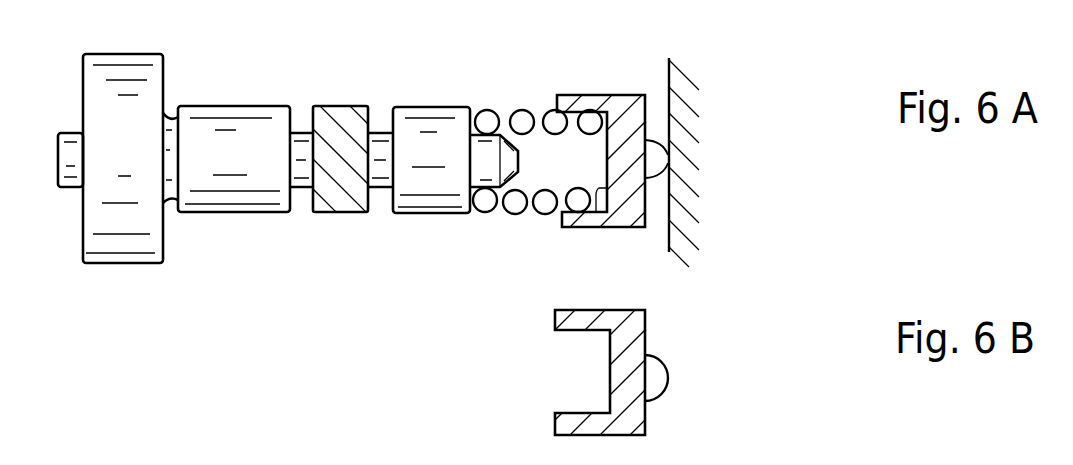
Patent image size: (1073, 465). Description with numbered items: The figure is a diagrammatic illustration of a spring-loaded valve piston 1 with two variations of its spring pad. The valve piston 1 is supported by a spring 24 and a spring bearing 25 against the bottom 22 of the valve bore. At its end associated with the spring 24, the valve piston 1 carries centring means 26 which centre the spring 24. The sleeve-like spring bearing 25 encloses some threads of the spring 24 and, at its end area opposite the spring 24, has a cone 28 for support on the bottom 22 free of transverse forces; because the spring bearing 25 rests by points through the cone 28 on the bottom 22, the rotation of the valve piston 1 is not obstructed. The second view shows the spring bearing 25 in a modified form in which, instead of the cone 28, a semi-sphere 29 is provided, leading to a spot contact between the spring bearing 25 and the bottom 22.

In FIG. 6A, the valve piston 1 is at (248, 87).
In FIG. 6A, the bottom 22 is at (705, 90).
In FIG. 6A, the spring 24 is at (488, 117).
In FIG. 6A, the spring bearing 25 is at (580, 98).
In FIG. 6B, the spring bearing 25 is at (633, 335).
In FIG. 6A, the centring means 26 is at (478, 155).
In FIG. 6A, the cone 28 is at (658, 157).
In FIG. 6B, the semi-sphere 29 is at (658, 383).